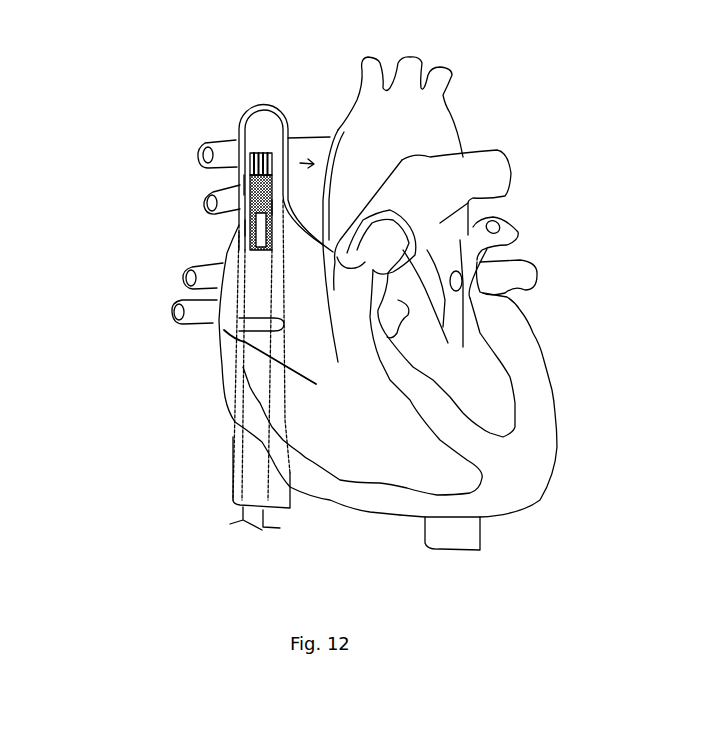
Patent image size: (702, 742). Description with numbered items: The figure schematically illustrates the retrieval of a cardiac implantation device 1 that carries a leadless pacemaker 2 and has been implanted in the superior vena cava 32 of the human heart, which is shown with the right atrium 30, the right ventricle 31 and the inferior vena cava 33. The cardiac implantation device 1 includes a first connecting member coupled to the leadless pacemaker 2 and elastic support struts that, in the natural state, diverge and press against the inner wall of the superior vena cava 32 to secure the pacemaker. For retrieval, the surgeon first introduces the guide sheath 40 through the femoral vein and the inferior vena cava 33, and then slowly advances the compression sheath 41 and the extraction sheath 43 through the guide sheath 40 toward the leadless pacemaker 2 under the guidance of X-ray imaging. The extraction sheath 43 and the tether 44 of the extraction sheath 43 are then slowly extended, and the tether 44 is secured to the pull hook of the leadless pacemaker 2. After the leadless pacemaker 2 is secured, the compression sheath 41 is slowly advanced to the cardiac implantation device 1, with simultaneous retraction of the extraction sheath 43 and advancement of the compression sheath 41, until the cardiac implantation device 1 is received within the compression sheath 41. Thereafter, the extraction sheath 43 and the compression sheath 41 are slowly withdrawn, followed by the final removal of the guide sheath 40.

The cardiac implantation device 1 is at (252, 148).
The leadless pacemaker 2 is at (250, 183).
The right atrium 30 is at (238, 290).
The right ventricle 31 is at (342, 435).
The superior vena cava 32 is at (272, 156).
The inferior vena cava 33 is at (233, 490).
The guide sheath 40 is at (236, 239).
The compression sheath 41 is at (245, 182).
The extraction sheath 43 is at (248, 229).
The tether 44 is at (258, 202).